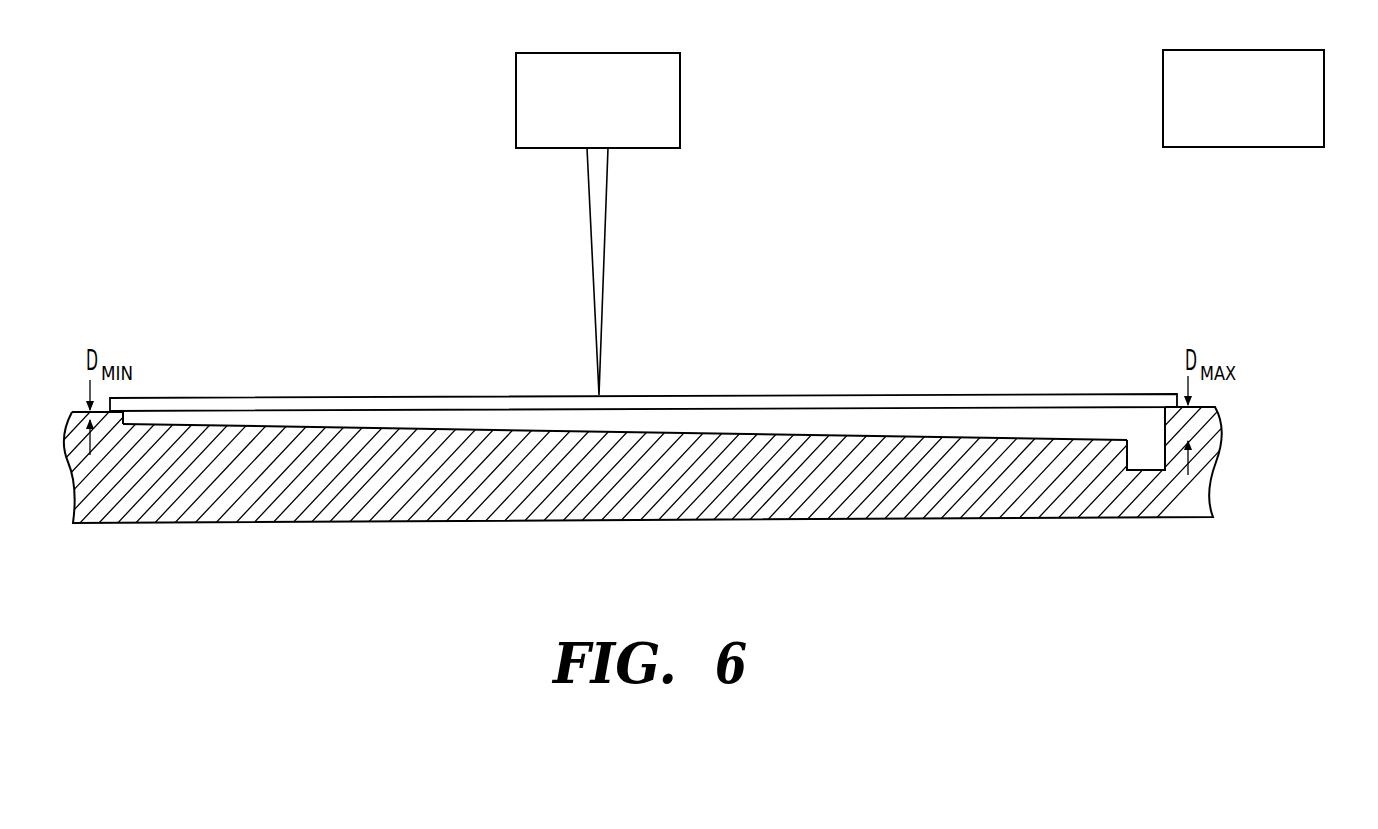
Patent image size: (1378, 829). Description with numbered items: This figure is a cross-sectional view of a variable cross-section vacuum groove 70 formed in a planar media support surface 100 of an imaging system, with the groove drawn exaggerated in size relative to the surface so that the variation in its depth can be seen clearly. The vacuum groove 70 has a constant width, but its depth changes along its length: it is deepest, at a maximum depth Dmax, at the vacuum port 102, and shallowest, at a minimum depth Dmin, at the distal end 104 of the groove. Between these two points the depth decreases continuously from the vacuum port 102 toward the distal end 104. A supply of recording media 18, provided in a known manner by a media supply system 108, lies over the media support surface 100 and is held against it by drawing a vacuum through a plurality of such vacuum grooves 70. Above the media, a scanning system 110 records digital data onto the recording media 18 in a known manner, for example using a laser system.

The recording media 18 is at (893, 398).
The variable cross-section vacuum groove 70 is at (1058, 422).
The planar media support surface 100 is at (1210, 453).
The vacuum port 102 is at (1142, 458).
The distal end 104 is at (123, 413).
The media supply system 108 is at (1263, 138).
The scanning system 110 is at (537, 137).